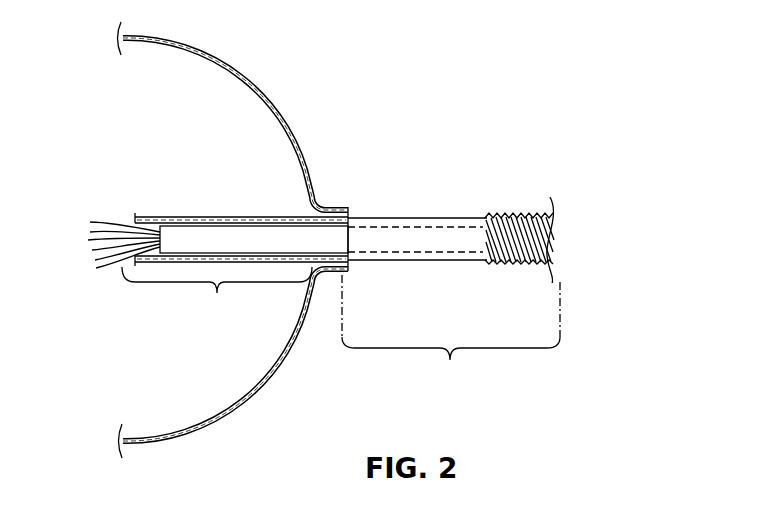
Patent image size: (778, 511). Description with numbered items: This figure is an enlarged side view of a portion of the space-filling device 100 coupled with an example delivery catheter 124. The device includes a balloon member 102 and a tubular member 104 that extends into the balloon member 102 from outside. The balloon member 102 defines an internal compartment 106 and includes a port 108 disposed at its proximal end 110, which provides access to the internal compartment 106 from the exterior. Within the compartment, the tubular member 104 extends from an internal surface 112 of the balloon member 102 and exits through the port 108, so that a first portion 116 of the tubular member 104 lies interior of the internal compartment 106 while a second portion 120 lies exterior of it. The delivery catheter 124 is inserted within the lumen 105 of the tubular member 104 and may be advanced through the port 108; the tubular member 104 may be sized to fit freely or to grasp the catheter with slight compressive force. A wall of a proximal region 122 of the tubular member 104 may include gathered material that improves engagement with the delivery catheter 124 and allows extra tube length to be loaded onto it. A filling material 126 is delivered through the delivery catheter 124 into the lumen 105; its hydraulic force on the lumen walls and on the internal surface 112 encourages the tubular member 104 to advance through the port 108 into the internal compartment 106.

The space-filling device 100 is at (290, 68).
The balloon member 102 is at (188, 50).
The tubular member 104 is at (455, 217).
The lumen 105 is at (150, 217).
The internal compartment 106 is at (247, 139).
The port 108 is at (333, 200).
The proximal end 110 is at (357, 210).
The internal surface 112 is at (218, 407).
The first portion 116 is at (217, 296).
The second portion 120 is at (451, 334).
The proximal region 122 is at (511, 268).
The delivery catheter 124 is at (468, 223).
The filling material 126 is at (107, 209).